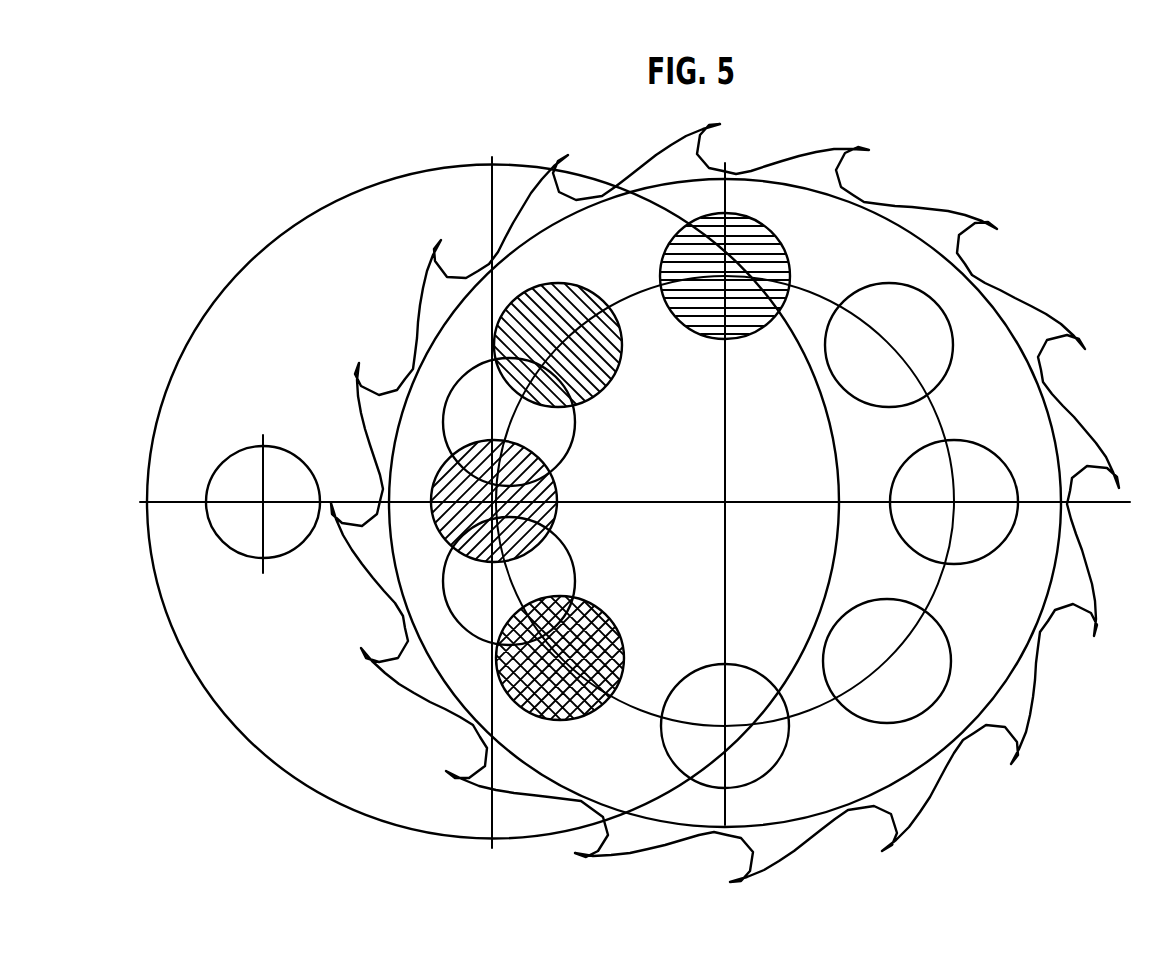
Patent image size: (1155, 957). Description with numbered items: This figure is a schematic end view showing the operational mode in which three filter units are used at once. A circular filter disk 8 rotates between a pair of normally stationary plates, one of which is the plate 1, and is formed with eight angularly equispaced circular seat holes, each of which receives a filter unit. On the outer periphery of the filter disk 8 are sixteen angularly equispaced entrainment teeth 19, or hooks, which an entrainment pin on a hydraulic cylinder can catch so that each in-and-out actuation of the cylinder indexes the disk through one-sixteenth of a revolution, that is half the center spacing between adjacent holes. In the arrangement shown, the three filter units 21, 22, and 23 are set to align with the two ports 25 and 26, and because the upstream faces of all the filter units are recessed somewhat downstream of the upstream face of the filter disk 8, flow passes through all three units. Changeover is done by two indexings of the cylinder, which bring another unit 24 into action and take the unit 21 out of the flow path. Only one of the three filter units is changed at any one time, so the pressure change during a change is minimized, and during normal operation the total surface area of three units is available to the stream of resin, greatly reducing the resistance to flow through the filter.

The stationary plate 1 is at (277, 273).
The circular filter disk 8 is at (853, 202).
The entrainment teeth 19 is at (985, 212).
The filter unit 21 is at (553, 710).
The filter unit 22 is at (443, 535).
The filter unit 23 is at (540, 312).
The filter unit 24 is at (698, 250).
The port 25 is at (465, 637).
The port 26 is at (463, 368).